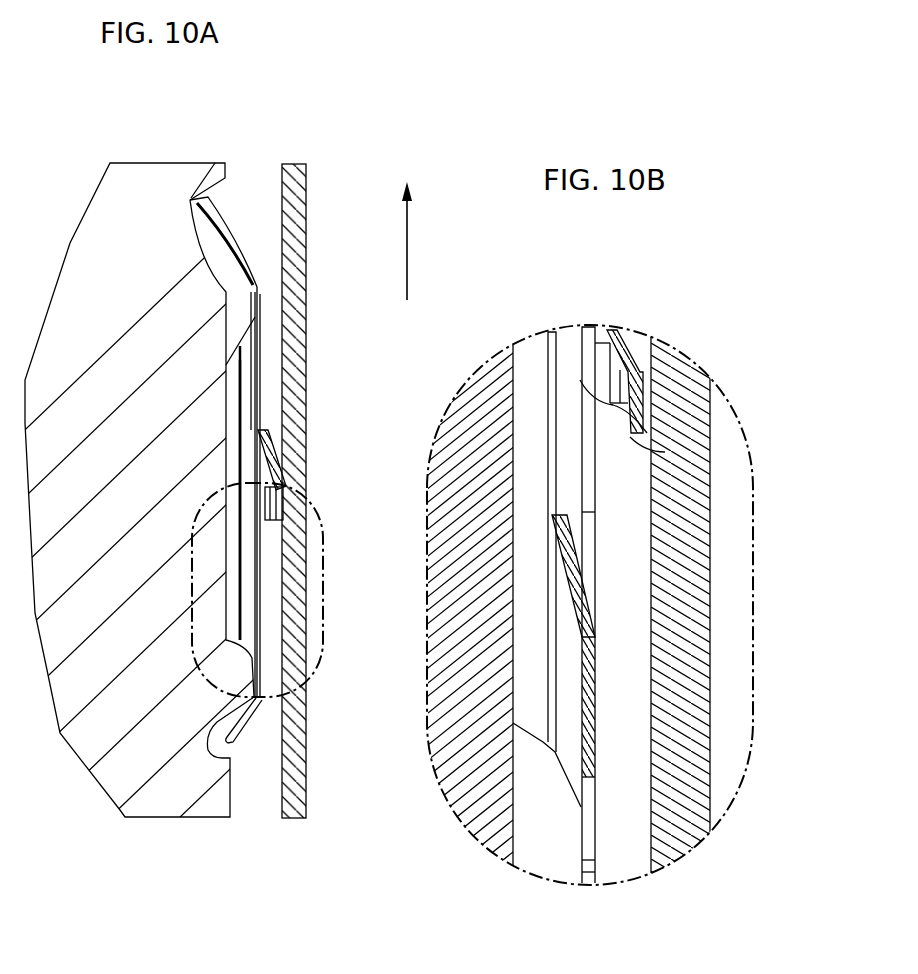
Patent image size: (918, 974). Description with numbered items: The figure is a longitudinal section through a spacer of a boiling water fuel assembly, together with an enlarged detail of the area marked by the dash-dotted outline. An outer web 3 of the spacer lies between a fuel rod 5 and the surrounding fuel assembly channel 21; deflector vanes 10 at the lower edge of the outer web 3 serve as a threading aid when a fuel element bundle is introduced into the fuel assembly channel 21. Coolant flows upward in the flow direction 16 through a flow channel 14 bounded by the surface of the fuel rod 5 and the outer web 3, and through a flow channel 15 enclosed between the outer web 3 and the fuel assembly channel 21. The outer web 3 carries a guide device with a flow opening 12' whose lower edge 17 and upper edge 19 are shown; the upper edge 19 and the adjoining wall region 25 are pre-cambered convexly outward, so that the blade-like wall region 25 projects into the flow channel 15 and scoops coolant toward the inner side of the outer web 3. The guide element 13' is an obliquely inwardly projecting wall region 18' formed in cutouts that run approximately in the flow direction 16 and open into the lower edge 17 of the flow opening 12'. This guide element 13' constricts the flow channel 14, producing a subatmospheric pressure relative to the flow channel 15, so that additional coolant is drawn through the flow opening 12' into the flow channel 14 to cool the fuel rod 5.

In FIG. 10B, the outer web 3 is at (595, 693).
In FIG. 10A, the fuel rod 5 is at (141, 187).
In FIG. 10B, the fuel rod 5 is at (488, 380).
In FIG. 10A, the deflector vanes 10 is at (249, 733).
In FIG. 10A, the flow opening 12' is at (320, 538).
In FIG. 10B, the flow opening 12' is at (696, 501).
In FIG. 10A, the guide element 13' is at (336, 569).
In FIG. 10B, the flow channel 14 is at (553, 850).
In FIG. 10B, the flow channel 15 is at (628, 848).
In FIG. 10B, the flow direction 16 is at (408, 252).
In FIG. 10B, the lower edge 17 is at (550, 503).
In FIG. 10A, the wall region 18' is at (402, 500).
In FIG. 10B, the upper edge 19 is at (665, 452).
In FIG. 10A, the fuel assembly channel 21 is at (296, 800).
In FIG. 10B, the fuel assembly channel 21 is at (682, 823).
In FIG. 10A, the wall region 25 is at (274, 456).
In FIG. 10B, the wall region 25 is at (634, 347).